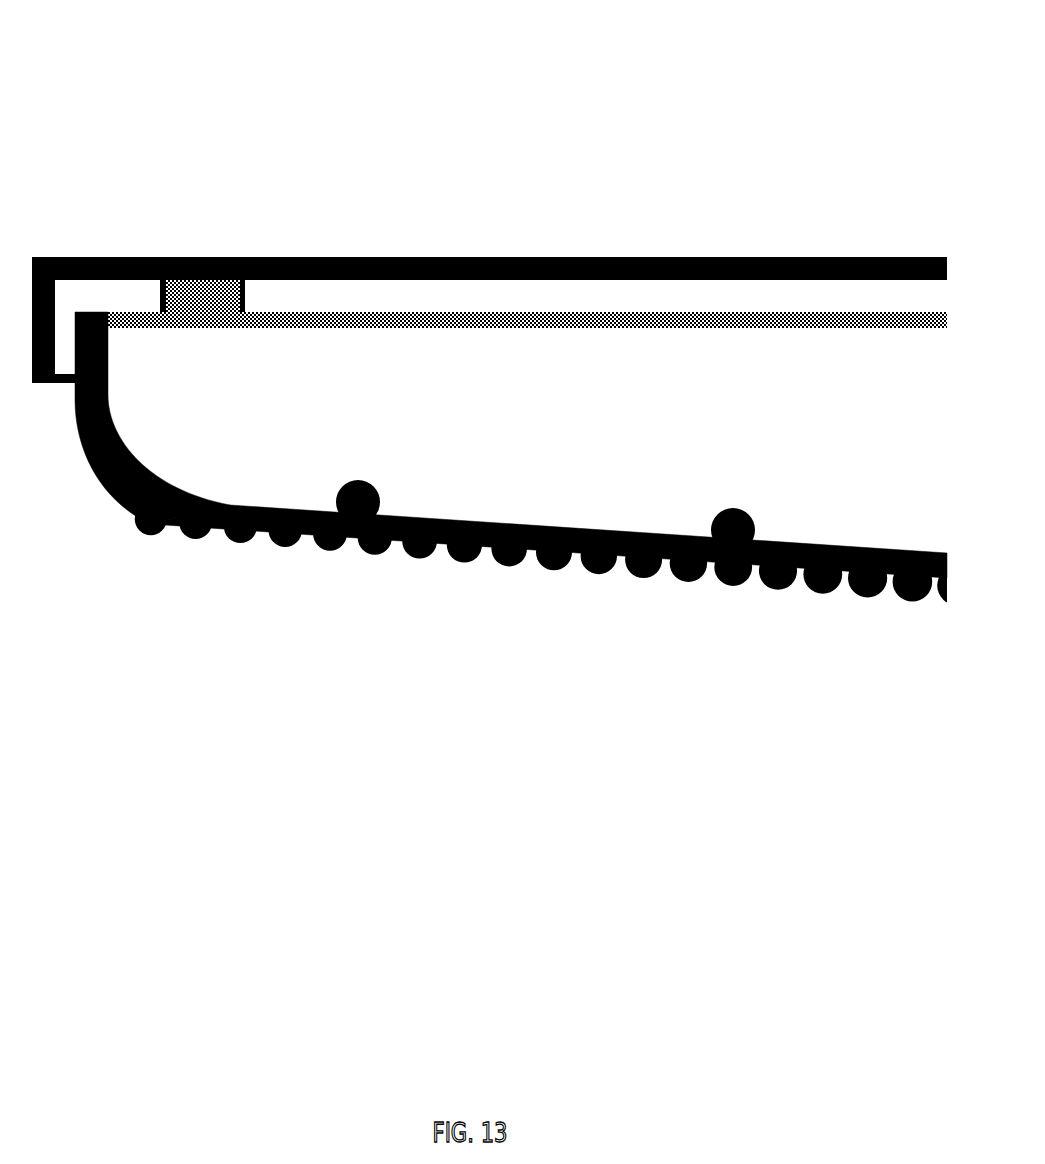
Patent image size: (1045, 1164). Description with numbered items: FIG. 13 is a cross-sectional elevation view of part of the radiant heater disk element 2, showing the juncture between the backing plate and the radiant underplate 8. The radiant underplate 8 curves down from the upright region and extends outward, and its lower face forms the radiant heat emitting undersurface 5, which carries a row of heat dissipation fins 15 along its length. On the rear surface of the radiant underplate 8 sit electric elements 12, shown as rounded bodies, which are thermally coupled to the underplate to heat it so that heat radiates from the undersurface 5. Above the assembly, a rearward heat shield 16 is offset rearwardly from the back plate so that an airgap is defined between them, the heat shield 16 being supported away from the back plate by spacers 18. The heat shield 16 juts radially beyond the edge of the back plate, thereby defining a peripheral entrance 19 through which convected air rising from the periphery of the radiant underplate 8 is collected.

The radiant heater disk element 2 is at (822, 100).
The radiant heat emitting undersurface 5 is at (526, 531).
The radiant underplate 8 is at (162, 473).
The electric element 12 is at (358, 480).
The heat dissipation fins 15 is at (247, 543).
The rearward heat shield 16 is at (337, 258).
The spacers 18 is at (217, 296).
The peripheral entrance 19 is at (59, 413).